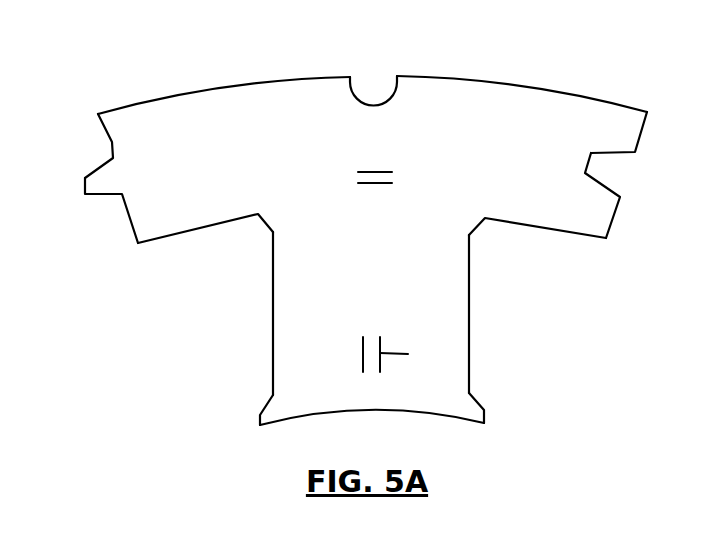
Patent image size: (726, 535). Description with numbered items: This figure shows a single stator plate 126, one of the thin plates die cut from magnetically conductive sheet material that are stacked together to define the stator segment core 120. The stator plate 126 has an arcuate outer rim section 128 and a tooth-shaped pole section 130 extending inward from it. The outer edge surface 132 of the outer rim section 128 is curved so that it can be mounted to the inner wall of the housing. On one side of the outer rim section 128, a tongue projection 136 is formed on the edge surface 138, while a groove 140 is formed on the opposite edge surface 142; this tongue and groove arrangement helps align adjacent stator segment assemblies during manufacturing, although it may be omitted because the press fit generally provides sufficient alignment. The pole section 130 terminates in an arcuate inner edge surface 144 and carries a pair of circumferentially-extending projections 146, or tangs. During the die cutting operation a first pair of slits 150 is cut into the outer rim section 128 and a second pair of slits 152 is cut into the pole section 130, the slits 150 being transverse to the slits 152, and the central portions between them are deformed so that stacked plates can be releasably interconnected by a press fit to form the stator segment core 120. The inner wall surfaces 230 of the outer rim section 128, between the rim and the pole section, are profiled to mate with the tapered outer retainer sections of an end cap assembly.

The stator segment core 120 is at (558, 65).
The stator plate 126 is at (267, 113).
The arcuate outer rim section 128 is at (522, 117).
The tooth-shaped pole section 130 is at (371, 313).
The outer edge surface 132 is at (180, 92).
The tongue projection 136 is at (85, 194).
The edge surface 138 is at (112, 142).
The groove 140 is at (591, 169).
The opposite edge surface 142 is at (641, 137).
The arcuate inner edge surface 144 is at (427, 415).
The circumferentially-extending projections 146 is at (485, 412).
The first pair of slits 150 is at (375, 170).
The second pair of slits 152 is at (362, 350).
The inner wall surfaces 230 is at (540, 230).